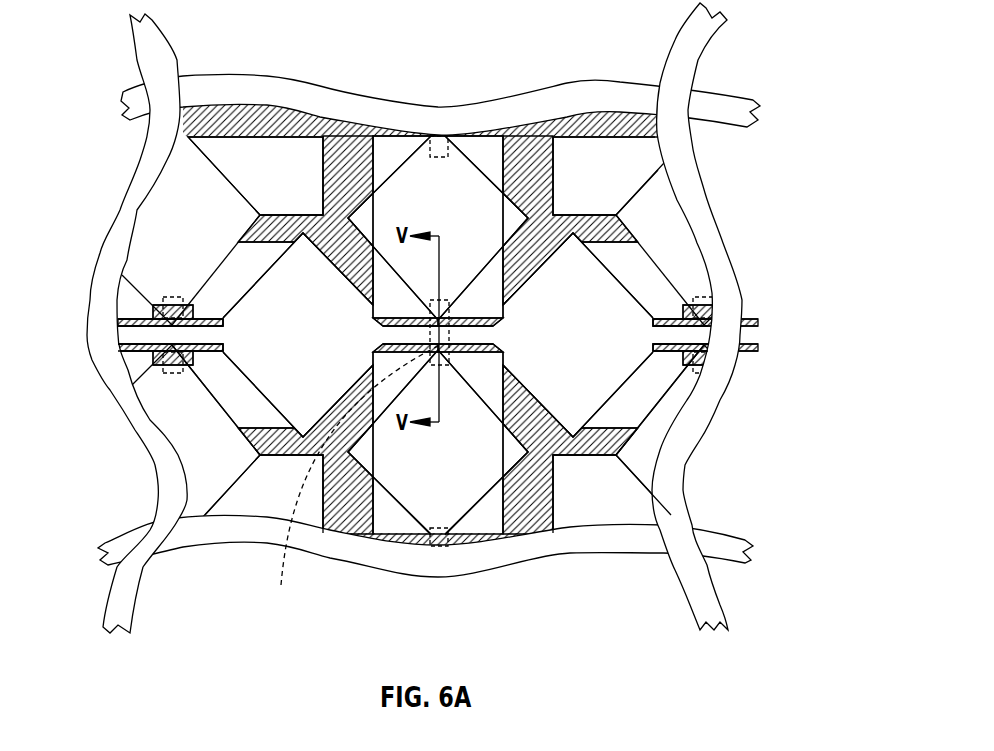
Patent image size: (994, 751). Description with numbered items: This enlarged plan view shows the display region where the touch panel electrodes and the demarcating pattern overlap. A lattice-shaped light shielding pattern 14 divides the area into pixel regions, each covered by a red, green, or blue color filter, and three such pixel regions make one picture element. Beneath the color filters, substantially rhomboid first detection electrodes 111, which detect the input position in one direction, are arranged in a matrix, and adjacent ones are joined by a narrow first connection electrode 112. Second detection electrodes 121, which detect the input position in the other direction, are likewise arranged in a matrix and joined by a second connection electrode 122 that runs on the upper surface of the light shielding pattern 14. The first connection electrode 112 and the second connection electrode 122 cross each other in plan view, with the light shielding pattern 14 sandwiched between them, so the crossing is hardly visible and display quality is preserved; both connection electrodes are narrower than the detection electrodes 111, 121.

The light shielding pattern 14 is at (523, 140).
The first detection electrode 111 is at (272, 307).
The first connection electrode 112 is at (463, 335).
The second detection electrode 121 is at (405, 200).
The second connection electrode 122 is at (353, 480).